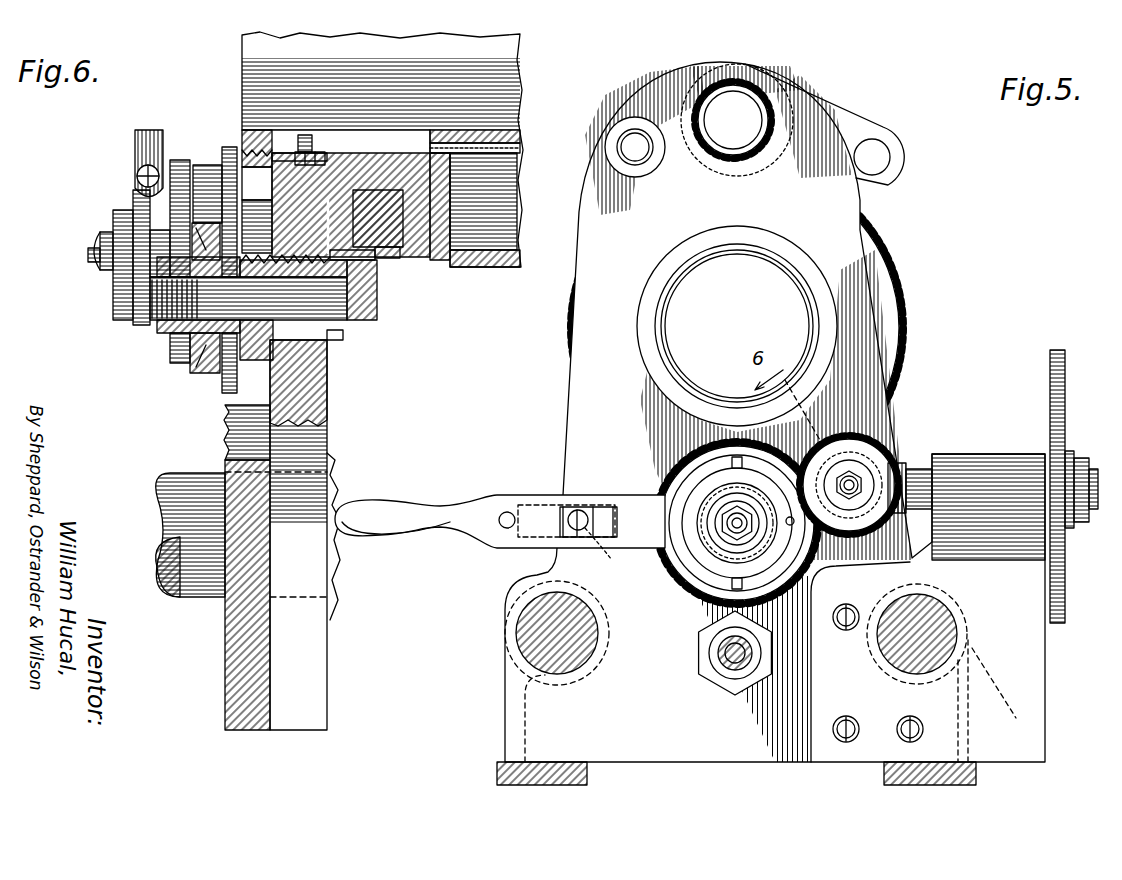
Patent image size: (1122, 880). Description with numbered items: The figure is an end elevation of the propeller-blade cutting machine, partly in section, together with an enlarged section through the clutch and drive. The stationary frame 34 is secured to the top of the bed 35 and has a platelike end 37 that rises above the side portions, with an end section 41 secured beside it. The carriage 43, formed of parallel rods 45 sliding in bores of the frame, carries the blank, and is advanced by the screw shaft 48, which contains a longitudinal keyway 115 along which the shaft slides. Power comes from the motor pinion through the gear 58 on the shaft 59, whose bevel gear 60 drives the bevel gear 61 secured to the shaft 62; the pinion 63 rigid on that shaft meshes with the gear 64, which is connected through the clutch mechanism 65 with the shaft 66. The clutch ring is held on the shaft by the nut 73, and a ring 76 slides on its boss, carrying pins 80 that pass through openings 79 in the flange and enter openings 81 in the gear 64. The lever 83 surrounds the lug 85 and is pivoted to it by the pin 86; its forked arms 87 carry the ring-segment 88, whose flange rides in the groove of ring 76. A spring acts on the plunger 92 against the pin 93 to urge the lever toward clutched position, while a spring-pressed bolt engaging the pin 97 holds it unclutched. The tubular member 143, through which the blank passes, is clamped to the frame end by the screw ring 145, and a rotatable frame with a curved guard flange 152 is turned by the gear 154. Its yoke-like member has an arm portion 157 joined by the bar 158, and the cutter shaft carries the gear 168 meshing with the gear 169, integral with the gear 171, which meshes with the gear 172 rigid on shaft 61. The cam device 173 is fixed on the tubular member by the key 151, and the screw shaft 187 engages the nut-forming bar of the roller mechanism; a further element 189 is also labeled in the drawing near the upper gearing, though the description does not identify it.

In FIG. 5, the stationary frame 34 is at (522, 713).
In FIG. 5, the bed 35 is at (497, 776).
In FIG. 6, the platelike end 37 is at (327, 430).
In FIG. 5, the platelike end 37 is at (577, 400).
In FIG. 6, the end section 41 is at (236, 665).
In FIG. 5, the end section 41 is at (1030, 662).
In FIG. 6, the carriage 43 is at (174, 521).
In FIG. 6, the rods 45 is at (195, 585).
In FIG. 5, the rods 45 is at (563, 658).
In FIG. 5, the screw shaft 48 is at (714, 672).
In FIG. 5, the gear 58 is at (1052, 380).
In FIG. 5, the shaft 59 is at (1092, 475).
In FIG. 5, the bevel gear 60 is at (898, 462).
In FIG. 6, the bevel gear 61 is at (206, 366).
In FIG. 5, the bevel gear 61 is at (842, 478).
In FIG. 6, the shaft 62 is at (172, 300).
In FIG. 5, the shaft 62 is at (858, 470).
In FIG. 6, the pinion 63 is at (240, 345).
In FIG. 5, the pinion 63 is at (918, 468).
In FIG. 6, the gear 64 is at (225, 153).
In FIG. 5, the gear 64 is at (690, 450).
In FIG. 6, the clutch mechanism 65 is at (127, 184).
In FIG. 6, the shaft 66 is at (88, 258).
In FIG. 5, the shaft 66 is at (728, 521).
In FIG. 6, the nut 73 is at (100, 242).
In FIG. 5, the nut 73 is at (722, 528).
In FIG. 5, the ring 76 is at (745, 540).
In FIG. 6, the openings 79 is at (178, 165).
In FIG. 5, the openings 79 is at (705, 470).
In FIG. 5, the pins 80 is at (672, 520).
In FIG. 5, the openings 81 is at (745, 560).
In FIG. 5, the lever 83 is at (411, 515).
In FIG. 5, the lug 85 is at (615, 510).
In FIG. 5, the pin 86 is at (614, 562).
In FIG. 6, the arms 87 is at (142, 155).
In FIG. 5, the arms 87 is at (742, 470).
In FIG. 5, the ring-segment 88 is at (720, 568).
In FIG. 5, the plunger 92 is at (582, 512).
In FIG. 5, the pin 93 is at (577, 540).
In FIG. 5, the pin 97 is at (505, 510).
In FIG. 5, the keyway 115 is at (706, 643).
In FIG. 6, the tubular member 143 is at (258, 140).
In FIG. 5, the tubular member 143 is at (675, 256).
In FIG. 6, the screw ring 145 is at (248, 150).
In FIG. 5, the screw ring 145 is at (660, 284).
In FIG. 6, the key 151 is at (517, 168).
In FIG. 6, the curved guard flange 152 is at (382, 168).
In FIG. 6, the gear 154 is at (342, 215).
In FIG. 5, the gear 154 is at (893, 236).
In FIG. 5, the arm portion 157 is at (818, 108).
In FIG. 5, the bar 158 is at (876, 152).
In FIG. 5, the gear 168 is at (755, 100).
In FIG. 6, the gear 169 is at (392, 260).
In FIG. 6, the gear 171 is at (386, 262).
In FIG. 6, the gear 172 is at (365, 338).
In FIG. 6, the cam device 173 is at (517, 150).
In FIG. 5, the screw shaft 187 is at (628, 140).
In FIG. 5, the gear 189 is at (733, 78).